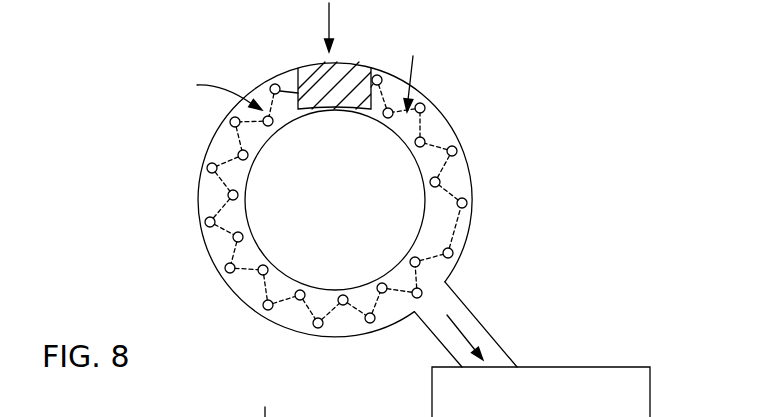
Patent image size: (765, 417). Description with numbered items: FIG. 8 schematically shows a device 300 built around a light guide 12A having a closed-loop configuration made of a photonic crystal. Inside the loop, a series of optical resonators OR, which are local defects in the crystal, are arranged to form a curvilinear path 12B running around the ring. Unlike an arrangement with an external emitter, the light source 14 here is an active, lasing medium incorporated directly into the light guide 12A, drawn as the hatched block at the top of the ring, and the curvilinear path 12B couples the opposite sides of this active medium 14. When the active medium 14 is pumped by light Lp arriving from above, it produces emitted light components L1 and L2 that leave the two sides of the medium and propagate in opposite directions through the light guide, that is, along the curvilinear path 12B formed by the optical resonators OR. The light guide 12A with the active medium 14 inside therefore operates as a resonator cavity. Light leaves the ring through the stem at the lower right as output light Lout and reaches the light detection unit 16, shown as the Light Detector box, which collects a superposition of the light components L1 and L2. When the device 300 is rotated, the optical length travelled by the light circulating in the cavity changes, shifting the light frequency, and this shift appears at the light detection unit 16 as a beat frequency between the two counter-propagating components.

The device 300 is at (148, 153).
The light guide 12A is at (450, 120).
The curvilinear path 12B is at (452, 170).
The light source 14 is at (347, 77).
The light detection unit 16 is at (650, 392).
The optical resonators OR is at (234, 240).
The pump light Lp is at (329, 30).
The emitted light component L1 is at (419, 79).
The emitted light component L2 is at (222, 94).
The output light Lout is at (478, 325).